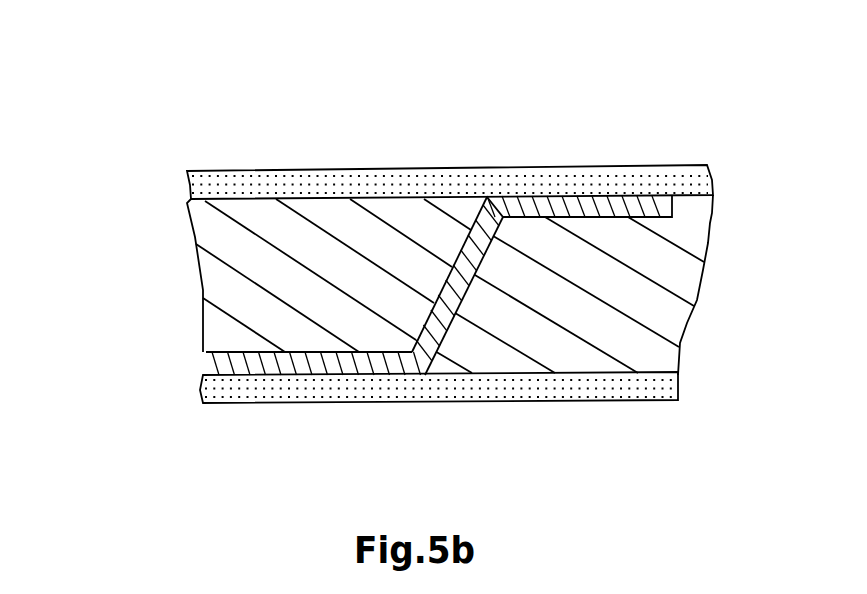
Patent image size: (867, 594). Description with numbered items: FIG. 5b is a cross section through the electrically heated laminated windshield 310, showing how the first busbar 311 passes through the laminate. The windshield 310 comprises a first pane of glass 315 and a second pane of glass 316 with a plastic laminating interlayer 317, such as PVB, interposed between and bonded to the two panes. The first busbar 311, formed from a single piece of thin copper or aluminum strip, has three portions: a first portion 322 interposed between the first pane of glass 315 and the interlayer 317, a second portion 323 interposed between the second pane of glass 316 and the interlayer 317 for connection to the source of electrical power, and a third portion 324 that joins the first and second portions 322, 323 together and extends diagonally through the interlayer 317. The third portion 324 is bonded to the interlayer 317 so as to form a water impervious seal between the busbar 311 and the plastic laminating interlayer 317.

The electrically heated laminated windshield 310 is at (474, 410).
The first busbar 311 is at (280, 375).
The first pane of glass 315 is at (237, 170).
The second pane of glass 316 is at (623, 401).
The plastic laminating interlayer 317 is at (378, 292).
The first portion 322 is at (261, 278).
The second portion 323 is at (631, 234).
The third portion 324 is at (427, 223).